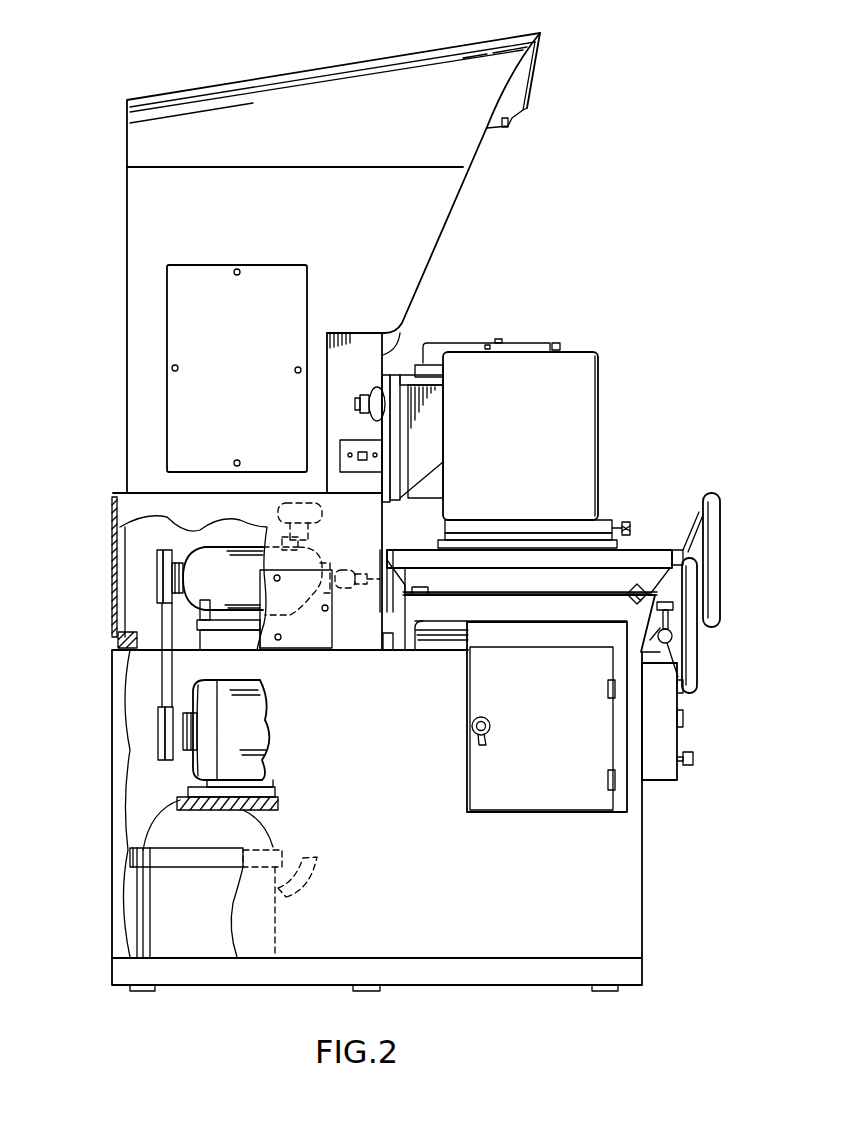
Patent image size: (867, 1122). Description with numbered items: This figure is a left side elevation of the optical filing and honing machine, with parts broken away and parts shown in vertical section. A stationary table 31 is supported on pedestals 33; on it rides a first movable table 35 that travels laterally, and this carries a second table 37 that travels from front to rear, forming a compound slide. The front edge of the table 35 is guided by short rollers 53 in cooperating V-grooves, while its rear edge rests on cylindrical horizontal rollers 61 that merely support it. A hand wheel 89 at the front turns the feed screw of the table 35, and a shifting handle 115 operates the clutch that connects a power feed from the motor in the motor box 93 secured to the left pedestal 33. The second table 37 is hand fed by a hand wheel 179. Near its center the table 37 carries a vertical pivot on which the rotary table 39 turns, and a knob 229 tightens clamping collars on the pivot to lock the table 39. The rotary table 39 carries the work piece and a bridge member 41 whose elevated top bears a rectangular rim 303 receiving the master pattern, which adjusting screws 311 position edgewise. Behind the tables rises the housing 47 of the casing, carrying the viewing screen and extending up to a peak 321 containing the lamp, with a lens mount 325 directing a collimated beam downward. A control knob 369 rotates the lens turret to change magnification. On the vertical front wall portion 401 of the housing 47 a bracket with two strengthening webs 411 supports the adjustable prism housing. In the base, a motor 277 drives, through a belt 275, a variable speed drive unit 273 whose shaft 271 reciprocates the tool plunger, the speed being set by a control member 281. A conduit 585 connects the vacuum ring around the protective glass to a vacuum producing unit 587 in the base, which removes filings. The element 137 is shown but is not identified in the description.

The stationary table 31 is at (525, 610).
The pedestals 33 is at (630, 898).
The first movable table 35 is at (572, 583).
The second table 37 is at (645, 553).
The rotary table 39 is at (555, 527).
The bridge member 41 is at (593, 403).
The housing 47 is at (418, 248).
The rollers 53 is at (632, 601).
The cylindrical horizontal rollers 61 is at (422, 587).
The hand wheel 89 is at (688, 660).
The motor box 93 is at (475, 777).
The shifting handle 115 is at (673, 635).
The control panel 137 is at (663, 772).
The hand wheel 179 is at (713, 547).
The knob 229 is at (631, 523).
The shaft 271 is at (367, 573).
The variable speed drive unit 273 is at (208, 557).
The belt 275 is at (153, 617).
The motor 277 is at (255, 717).
The control member 281 is at (322, 535).
The rectangular rim 303 is at (459, 343).
The adjusting screws 311 is at (559, 343).
The peak 321 is at (533, 78).
The lens mount 325 is at (508, 125).
The control knob 369 is at (378, 388).
The vertical front wall portion 401 is at (401, 322).
The strengthening webs 411 is at (421, 480).
The conduit 585 is at (313, 878).
The vacuum producing unit 587 is at (158, 830).